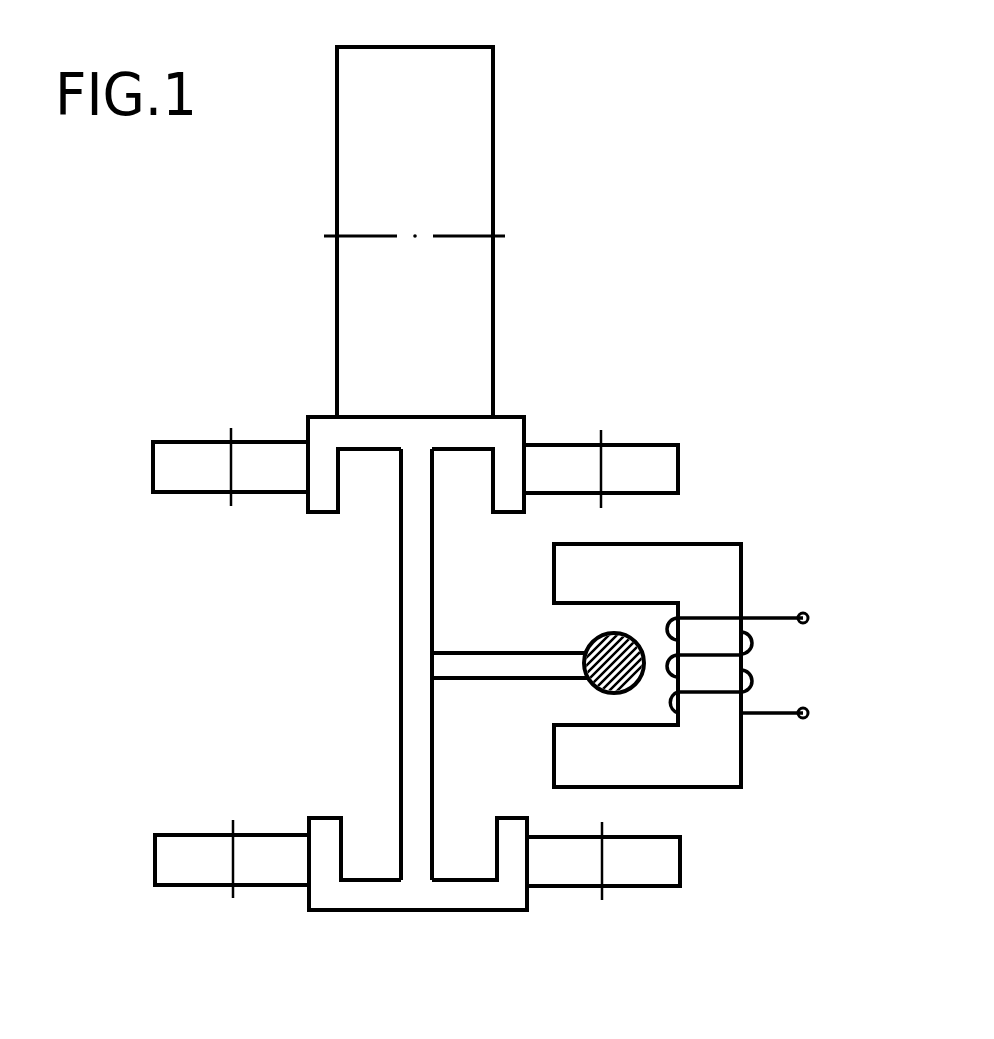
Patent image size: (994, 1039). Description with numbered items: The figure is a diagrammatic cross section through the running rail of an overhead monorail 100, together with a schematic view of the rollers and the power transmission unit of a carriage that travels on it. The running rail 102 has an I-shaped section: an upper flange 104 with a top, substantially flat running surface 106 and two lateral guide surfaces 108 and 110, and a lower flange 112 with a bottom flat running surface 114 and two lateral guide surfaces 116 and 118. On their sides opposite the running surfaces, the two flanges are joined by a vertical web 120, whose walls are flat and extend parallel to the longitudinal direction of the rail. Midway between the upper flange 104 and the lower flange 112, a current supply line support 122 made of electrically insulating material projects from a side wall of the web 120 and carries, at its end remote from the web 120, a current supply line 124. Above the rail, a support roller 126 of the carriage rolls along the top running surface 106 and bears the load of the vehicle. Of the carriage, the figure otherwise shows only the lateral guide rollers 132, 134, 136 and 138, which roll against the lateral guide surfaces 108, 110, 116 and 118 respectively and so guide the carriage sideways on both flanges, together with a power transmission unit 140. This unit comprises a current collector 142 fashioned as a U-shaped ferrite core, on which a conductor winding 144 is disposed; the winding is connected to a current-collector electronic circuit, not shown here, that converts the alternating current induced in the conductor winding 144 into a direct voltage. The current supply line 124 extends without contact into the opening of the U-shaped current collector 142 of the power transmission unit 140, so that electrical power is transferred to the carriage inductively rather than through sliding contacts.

The overhead monorail 100 is at (707, 292).
The running rail 102 is at (419, 654).
The upper flange 104 is at (415, 430).
The top running surface 106 is at (500, 418).
The lateral guide surface 108 is at (306, 487).
The lateral guide surface 110 is at (532, 445).
The lower flange 112 is at (419, 908).
The bottom running surface 114 is at (405, 912).
The lateral guide surface 116 is at (305, 868).
The lateral guide surface 118 is at (535, 888).
The vertical web 120 is at (413, 670).
The current supply line support 122 is at (505, 668).
The current supply line 124 is at (590, 640).
The support roller 126 is at (493, 192).
The lateral guide roller 132 is at (181, 450).
The lateral guide roller 134 is at (675, 465).
The lateral guide roller 136 is at (168, 860).
The lateral guide roller 138 is at (660, 862).
The power transmission unit 140 is at (718, 655).
The current collector 142 is at (732, 770).
The conductor winding 144 is at (755, 683).